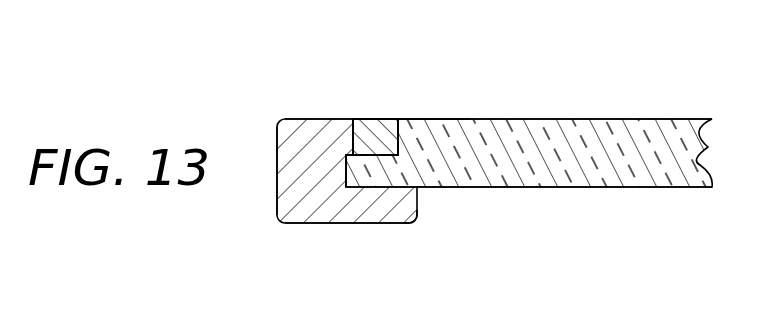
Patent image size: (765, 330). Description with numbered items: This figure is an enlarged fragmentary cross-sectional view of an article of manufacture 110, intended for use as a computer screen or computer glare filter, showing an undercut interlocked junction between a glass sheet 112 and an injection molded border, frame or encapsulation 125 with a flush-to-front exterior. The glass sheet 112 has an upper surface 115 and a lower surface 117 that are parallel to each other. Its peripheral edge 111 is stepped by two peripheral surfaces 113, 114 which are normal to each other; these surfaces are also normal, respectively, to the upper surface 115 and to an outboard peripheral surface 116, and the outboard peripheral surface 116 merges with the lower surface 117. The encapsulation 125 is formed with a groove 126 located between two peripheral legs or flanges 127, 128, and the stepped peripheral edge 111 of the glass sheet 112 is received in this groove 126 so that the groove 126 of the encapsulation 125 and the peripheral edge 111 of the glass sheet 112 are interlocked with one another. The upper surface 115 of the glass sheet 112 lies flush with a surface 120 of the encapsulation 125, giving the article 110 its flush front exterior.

The article of manufacture 110 is at (512, 77).
The peripheral edge 111 is at (410, 174).
The glass sheet 112 is at (632, 115).
The peripheral surface 113 is at (392, 119).
The peripheral surface 114 is at (353, 119).
The upper surface 115 is at (428, 119).
The outboard peripheral surface 116 is at (348, 182).
The lower surface 117 is at (597, 189).
The surface 120 is at (292, 119).
The encapsulation 125 is at (272, 211).
The groove 126 is at (381, 195).
The peripheral leg 127 is at (366, 128).
The peripheral leg 128 is at (410, 224).